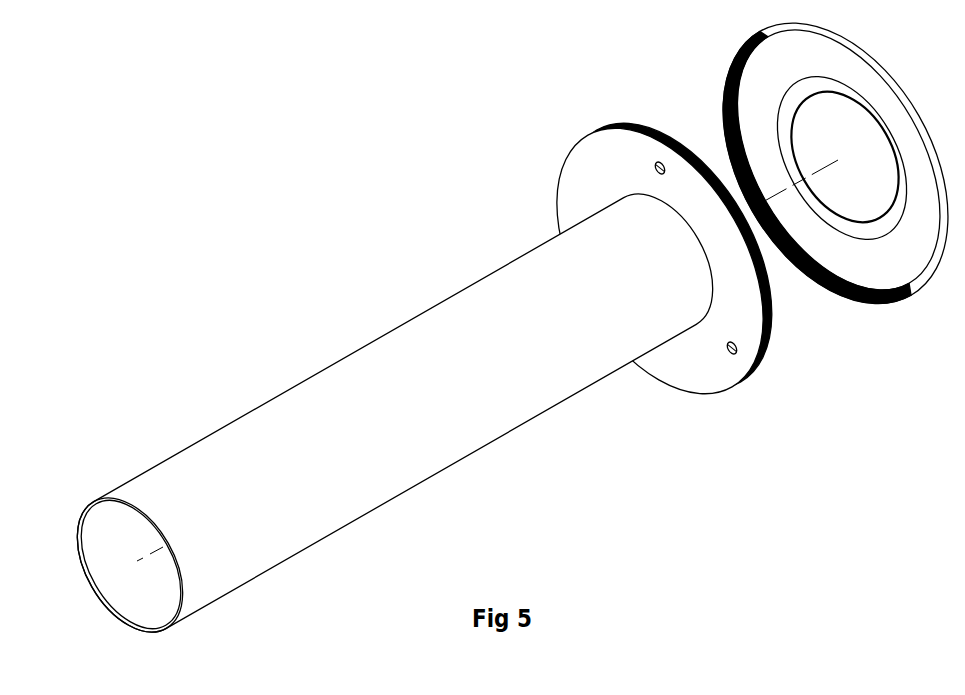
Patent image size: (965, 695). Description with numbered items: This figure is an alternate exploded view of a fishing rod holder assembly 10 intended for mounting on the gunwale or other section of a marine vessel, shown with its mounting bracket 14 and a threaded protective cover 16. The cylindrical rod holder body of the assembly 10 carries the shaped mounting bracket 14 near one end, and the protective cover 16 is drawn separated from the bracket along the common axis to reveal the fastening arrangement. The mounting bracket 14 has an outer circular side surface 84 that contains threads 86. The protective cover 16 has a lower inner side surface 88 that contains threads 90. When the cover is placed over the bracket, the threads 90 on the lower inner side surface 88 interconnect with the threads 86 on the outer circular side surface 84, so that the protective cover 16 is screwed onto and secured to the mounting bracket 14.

The fishing rod holder assembly 10 is at (267, 537).
The mounting bracket 14 is at (665, 258).
The protective cover 16 is at (821, 174).
The outer circular side surface 84 is at (768, 315).
The threads 86 is at (768, 343).
The lower inner side surface 88 is at (838, 293).
The threads 90 is at (842, 201).